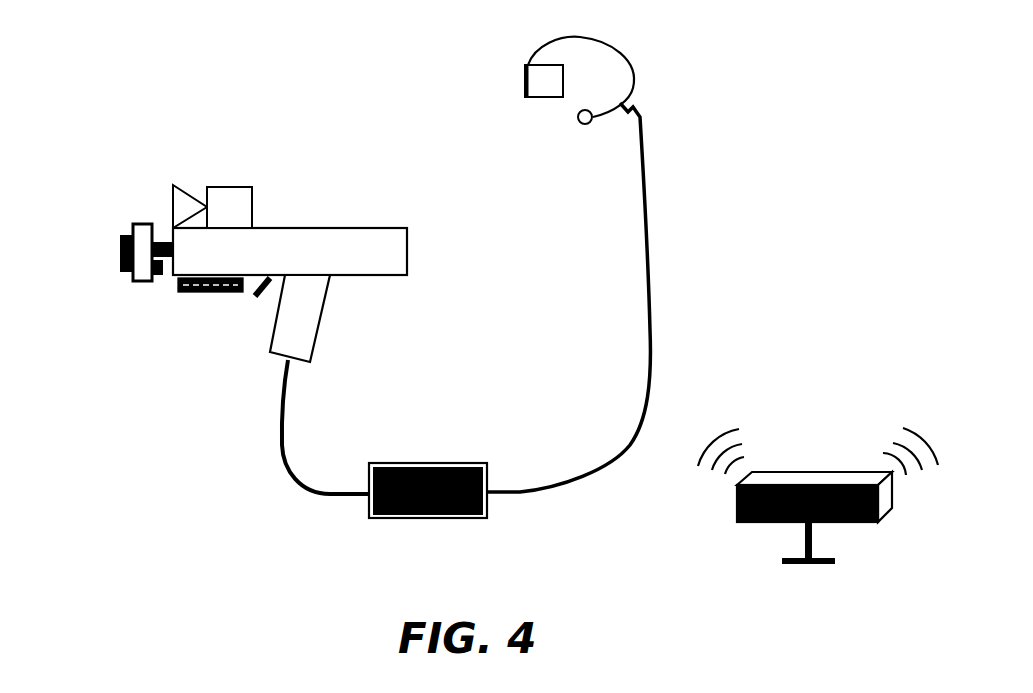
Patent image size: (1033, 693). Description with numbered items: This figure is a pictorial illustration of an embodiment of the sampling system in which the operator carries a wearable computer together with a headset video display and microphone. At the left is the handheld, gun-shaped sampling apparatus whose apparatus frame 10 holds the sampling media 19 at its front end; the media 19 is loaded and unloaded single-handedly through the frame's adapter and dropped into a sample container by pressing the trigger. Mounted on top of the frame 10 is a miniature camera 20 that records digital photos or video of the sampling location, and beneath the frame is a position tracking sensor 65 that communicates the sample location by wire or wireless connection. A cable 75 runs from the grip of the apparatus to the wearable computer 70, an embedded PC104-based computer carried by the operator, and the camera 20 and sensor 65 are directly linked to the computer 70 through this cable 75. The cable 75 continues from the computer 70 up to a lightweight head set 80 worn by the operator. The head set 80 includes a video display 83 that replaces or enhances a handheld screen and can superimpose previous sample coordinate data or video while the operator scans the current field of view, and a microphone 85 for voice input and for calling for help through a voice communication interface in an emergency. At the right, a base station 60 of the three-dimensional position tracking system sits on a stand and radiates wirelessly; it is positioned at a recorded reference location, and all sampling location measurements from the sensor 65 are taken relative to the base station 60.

The apparatus frame 10 is at (222, 264).
The sampling media 19 is at (97, 246).
The miniature camera 20 is at (247, 166).
The position tracking sensor 65 is at (165, 324).
The cable 75 is at (466, 298).
The wearable computer 70 is at (435, 498).
The head set 80 is at (622, 66).
The video display 83 is at (501, 56).
The microphone 85 is at (551, 142).
The base station 60 is at (814, 515).